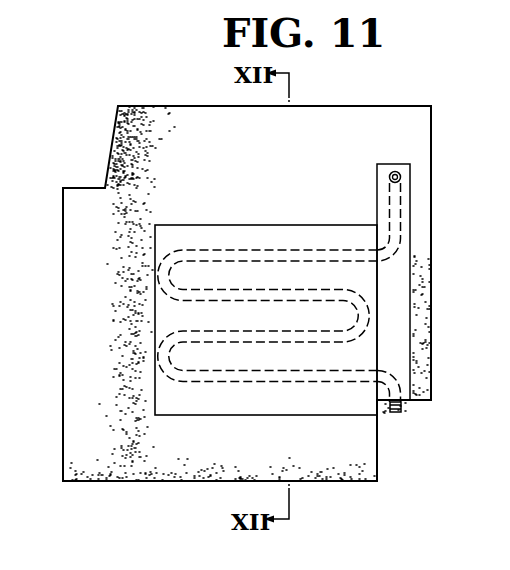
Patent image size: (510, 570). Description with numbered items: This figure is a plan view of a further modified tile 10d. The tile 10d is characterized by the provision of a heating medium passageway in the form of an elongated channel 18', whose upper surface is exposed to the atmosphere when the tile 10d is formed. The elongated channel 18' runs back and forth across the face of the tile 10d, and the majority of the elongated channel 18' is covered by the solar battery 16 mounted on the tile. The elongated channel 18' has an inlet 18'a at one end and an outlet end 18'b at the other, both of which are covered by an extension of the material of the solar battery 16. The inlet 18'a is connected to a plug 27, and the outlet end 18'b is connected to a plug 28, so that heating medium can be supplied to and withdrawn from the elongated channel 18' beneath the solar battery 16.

The tile 10d is at (362, 106).
The solar battery 16 is at (166, 322).
The elongated channel 18' is at (268, 385).
The inlet 18'a is at (438, 222).
The outlet end 18'b is at (436, 384).
The plug 27 is at (401, 177).
The plug 28 is at (396, 413).